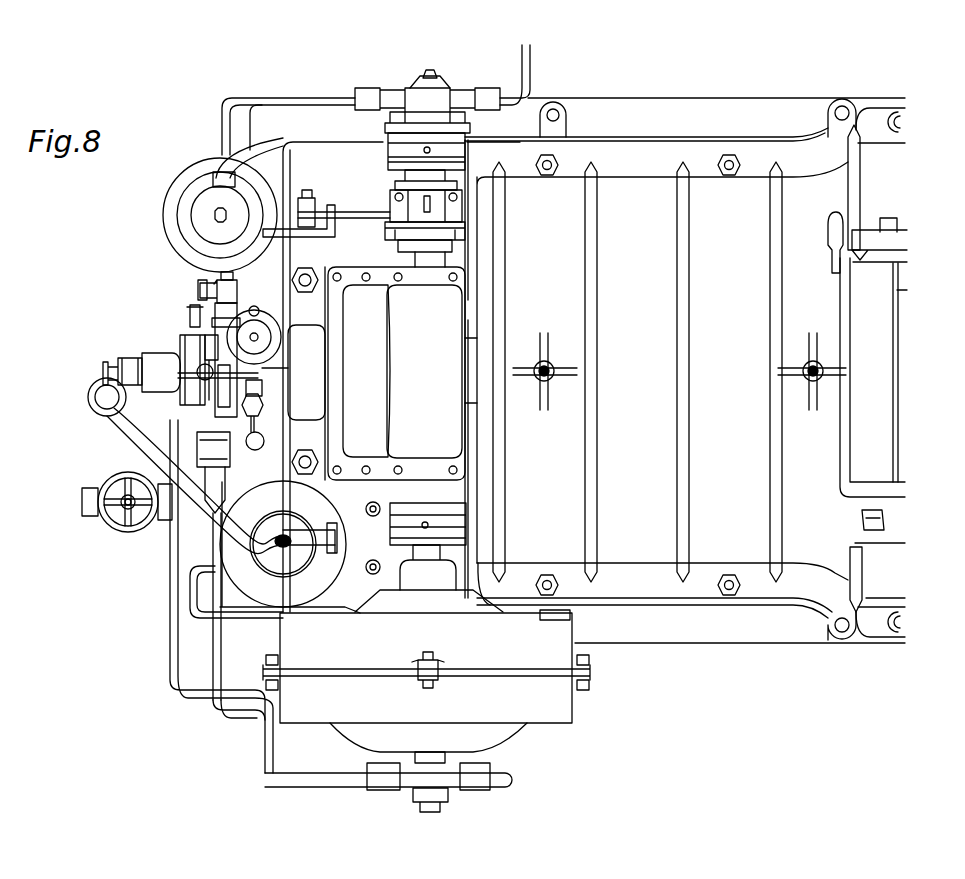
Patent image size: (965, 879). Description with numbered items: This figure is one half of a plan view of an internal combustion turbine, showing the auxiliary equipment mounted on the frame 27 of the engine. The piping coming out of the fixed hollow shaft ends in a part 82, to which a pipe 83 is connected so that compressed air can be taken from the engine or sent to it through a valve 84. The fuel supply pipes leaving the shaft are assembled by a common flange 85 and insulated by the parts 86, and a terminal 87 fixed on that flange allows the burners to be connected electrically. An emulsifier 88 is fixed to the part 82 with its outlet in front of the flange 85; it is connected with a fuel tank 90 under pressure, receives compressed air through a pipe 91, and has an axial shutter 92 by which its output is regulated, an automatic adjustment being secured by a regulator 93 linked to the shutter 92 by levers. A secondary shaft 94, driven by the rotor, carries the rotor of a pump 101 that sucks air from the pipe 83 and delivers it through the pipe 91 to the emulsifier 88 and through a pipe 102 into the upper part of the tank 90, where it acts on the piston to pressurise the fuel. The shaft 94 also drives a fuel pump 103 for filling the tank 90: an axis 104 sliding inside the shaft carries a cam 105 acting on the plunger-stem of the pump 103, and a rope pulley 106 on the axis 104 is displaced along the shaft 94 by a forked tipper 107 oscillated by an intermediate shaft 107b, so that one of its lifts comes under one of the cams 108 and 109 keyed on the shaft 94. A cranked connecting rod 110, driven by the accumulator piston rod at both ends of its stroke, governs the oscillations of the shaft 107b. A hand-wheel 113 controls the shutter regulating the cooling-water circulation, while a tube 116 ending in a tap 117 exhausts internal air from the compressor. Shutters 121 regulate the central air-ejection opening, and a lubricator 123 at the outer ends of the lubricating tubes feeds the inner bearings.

The frame 27 is at (663, 630).
The part 82 is at (208, 342).
The pipe 83 is at (218, 489).
The valve 84 is at (122, 527).
The common flange 85 is at (205, 358).
The insulating parts 86 is at (200, 371).
The terminal 87 is at (188, 318).
The emulsifier 88 is at (162, 358).
The fuel tank 90 is at (170, 226).
The pipe 91 is at (175, 598).
The axial shutter 92 is at (120, 360).
The regulator 93 is at (234, 548).
The secondary shaft 94 is at (430, 256).
The pump 101 is at (316, 715).
The pipe 102 is at (247, 152).
The fuel pump 103 is at (439, 80).
The axis 104 is at (436, 72).
The cam 105 is at (446, 98).
The rope pulley 106 is at (400, 222).
The forked tipper 107 is at (466, 225).
The intermediate shaft 107b is at (345, 212).
The cam 108 is at (400, 183).
The cam 109 is at (412, 243).
The cranked connecting rod 110 is at (268, 232).
The hand-wheel 113 is at (262, 320).
The tube 116 is at (254, 387).
The tap 117 is at (222, 392).
The shutters 121 is at (885, 418).
The lubricator 123 is at (258, 415).